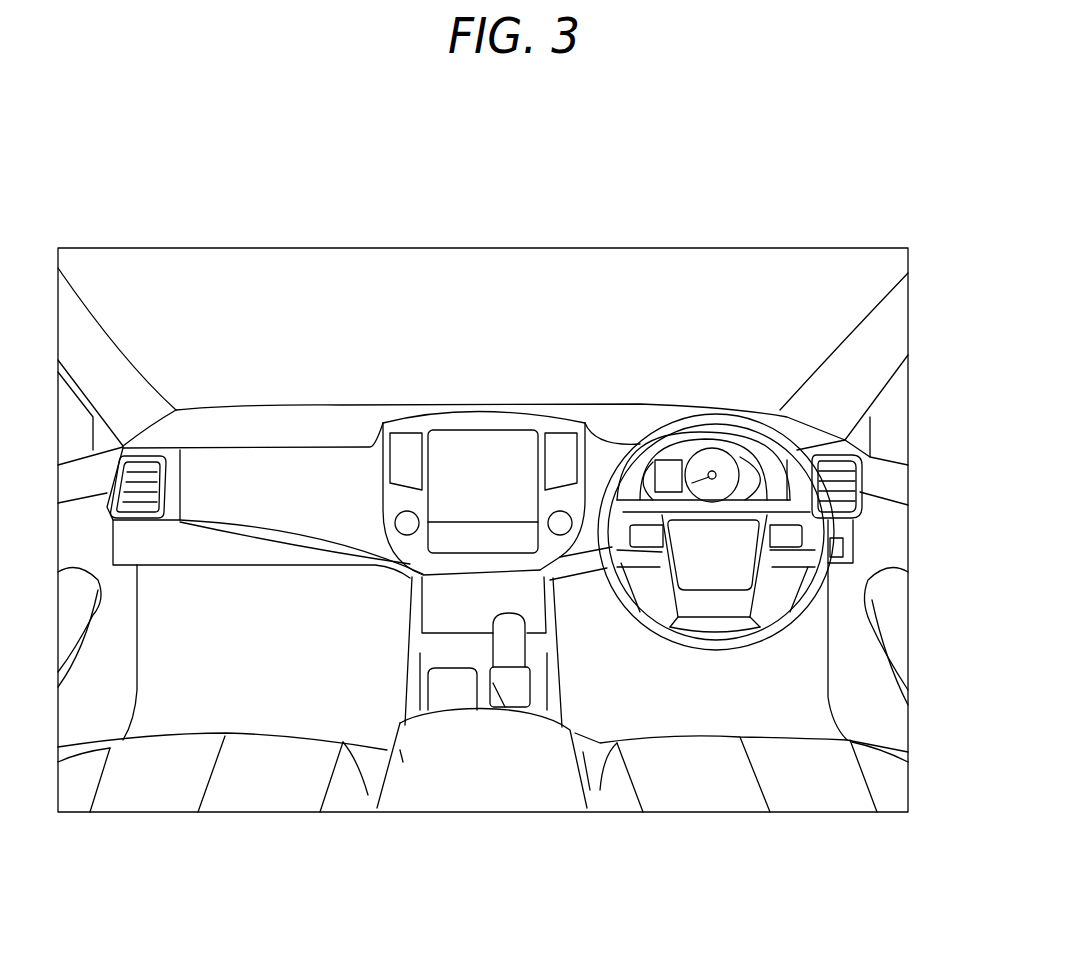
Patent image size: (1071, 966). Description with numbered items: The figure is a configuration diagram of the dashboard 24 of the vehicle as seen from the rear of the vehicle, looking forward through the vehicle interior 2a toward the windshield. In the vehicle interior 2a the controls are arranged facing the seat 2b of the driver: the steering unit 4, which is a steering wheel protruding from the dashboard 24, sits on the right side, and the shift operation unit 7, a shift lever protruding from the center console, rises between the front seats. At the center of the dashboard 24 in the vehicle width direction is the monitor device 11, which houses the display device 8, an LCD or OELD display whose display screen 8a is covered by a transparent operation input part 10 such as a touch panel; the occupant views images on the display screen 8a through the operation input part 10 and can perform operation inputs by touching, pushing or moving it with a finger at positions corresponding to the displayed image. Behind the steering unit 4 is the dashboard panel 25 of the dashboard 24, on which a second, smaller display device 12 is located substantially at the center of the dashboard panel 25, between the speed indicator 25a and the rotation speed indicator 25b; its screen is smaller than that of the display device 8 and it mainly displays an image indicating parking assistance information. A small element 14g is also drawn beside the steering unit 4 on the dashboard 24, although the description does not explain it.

The vehicle interior 2a is at (275, 262).
The seat 2b is at (697, 798).
The dashboard 24 is at (372, 402).
The monitor device 11 is at (484, 359).
The display screen 8a is at (500, 348).
The display device 8 is at (500, 348).
The operation input part 10 is at (512, 448).
The display device 12 is at (664, 480).
The speed indicator 25a is at (610, 463).
The dashboard panel 25 is at (688, 322).
The rotation speed indicator 25b is at (713, 462).
The steering unit 4 is at (745, 427).
The switch 14g is at (848, 544).
The shift operation unit 7 is at (510, 653).